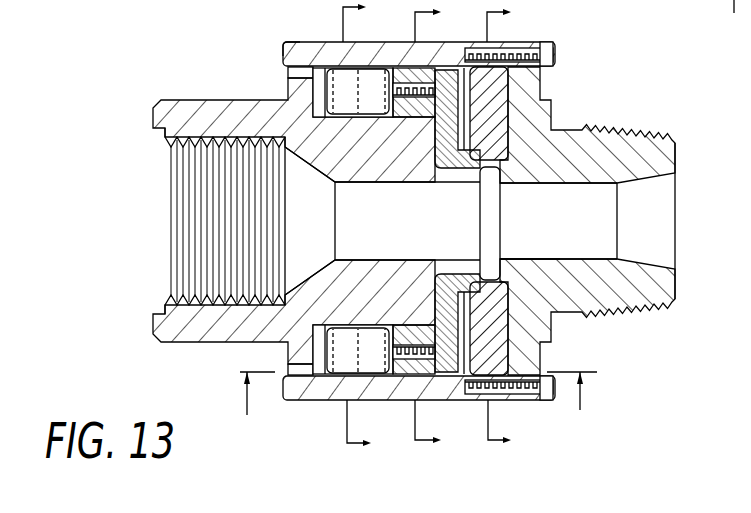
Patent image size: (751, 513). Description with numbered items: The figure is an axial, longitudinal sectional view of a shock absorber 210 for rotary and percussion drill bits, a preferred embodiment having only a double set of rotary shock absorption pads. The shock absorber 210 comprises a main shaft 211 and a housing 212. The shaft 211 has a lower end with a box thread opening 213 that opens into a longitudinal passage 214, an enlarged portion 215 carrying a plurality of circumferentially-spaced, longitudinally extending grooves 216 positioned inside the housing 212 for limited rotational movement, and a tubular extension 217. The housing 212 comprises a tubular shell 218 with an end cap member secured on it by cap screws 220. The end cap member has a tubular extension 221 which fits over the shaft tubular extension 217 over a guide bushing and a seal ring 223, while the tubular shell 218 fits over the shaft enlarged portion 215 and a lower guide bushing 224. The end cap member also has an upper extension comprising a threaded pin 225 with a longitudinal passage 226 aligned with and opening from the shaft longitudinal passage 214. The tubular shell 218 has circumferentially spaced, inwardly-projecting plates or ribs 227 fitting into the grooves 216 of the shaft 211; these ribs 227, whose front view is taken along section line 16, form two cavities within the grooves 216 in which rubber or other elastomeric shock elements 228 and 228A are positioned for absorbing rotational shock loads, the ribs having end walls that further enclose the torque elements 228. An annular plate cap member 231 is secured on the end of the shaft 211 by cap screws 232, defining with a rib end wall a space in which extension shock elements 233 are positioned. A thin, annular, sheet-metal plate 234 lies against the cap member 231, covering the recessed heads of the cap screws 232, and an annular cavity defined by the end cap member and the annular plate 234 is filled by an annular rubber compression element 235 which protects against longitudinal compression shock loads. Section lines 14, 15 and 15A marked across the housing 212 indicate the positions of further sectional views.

The shock absorber 210 is at (221, 96).
The main shaft 211 is at (199, 330).
The housing 212 is at (298, 36).
The box thread opening 213 is at (155, 170).
The longitudinal passage 214 is at (388, 229).
The enlarged portion 215 is at (288, 80).
The grooves 216 is at (315, 97).
The tubular extension 217 is at (447, 170).
The tubular shell 218 is at (300, 52).
The cap screws 220 is at (556, 52).
The tubular extension 221 is at (497, 176).
The seal ring 223 is at (468, 272).
The lower guide bushing 224 is at (300, 378).
The threaded pin 225 is at (650, 128).
The longitudinal passage 226 is at (597, 262).
The ribs 227 is at (345, 110).
The shock elements 228 is at (345, 315).
The shock elements 228A is at (373, 317).
The annular plate cap member 231 is at (428, 278).
The cap screws 232 is at (481, 328).
The extension shock elements 233 is at (400, 395).
The annular sheet-metal plate 234 is at (518, 247).
The annular rubber compression element 235 is at (508, 95).
The section line 14 is at (377, 232).
The section line 15 is at (449, 231).
The section line 15A is at (528, 231).
The section line 16 is at (416, 414).